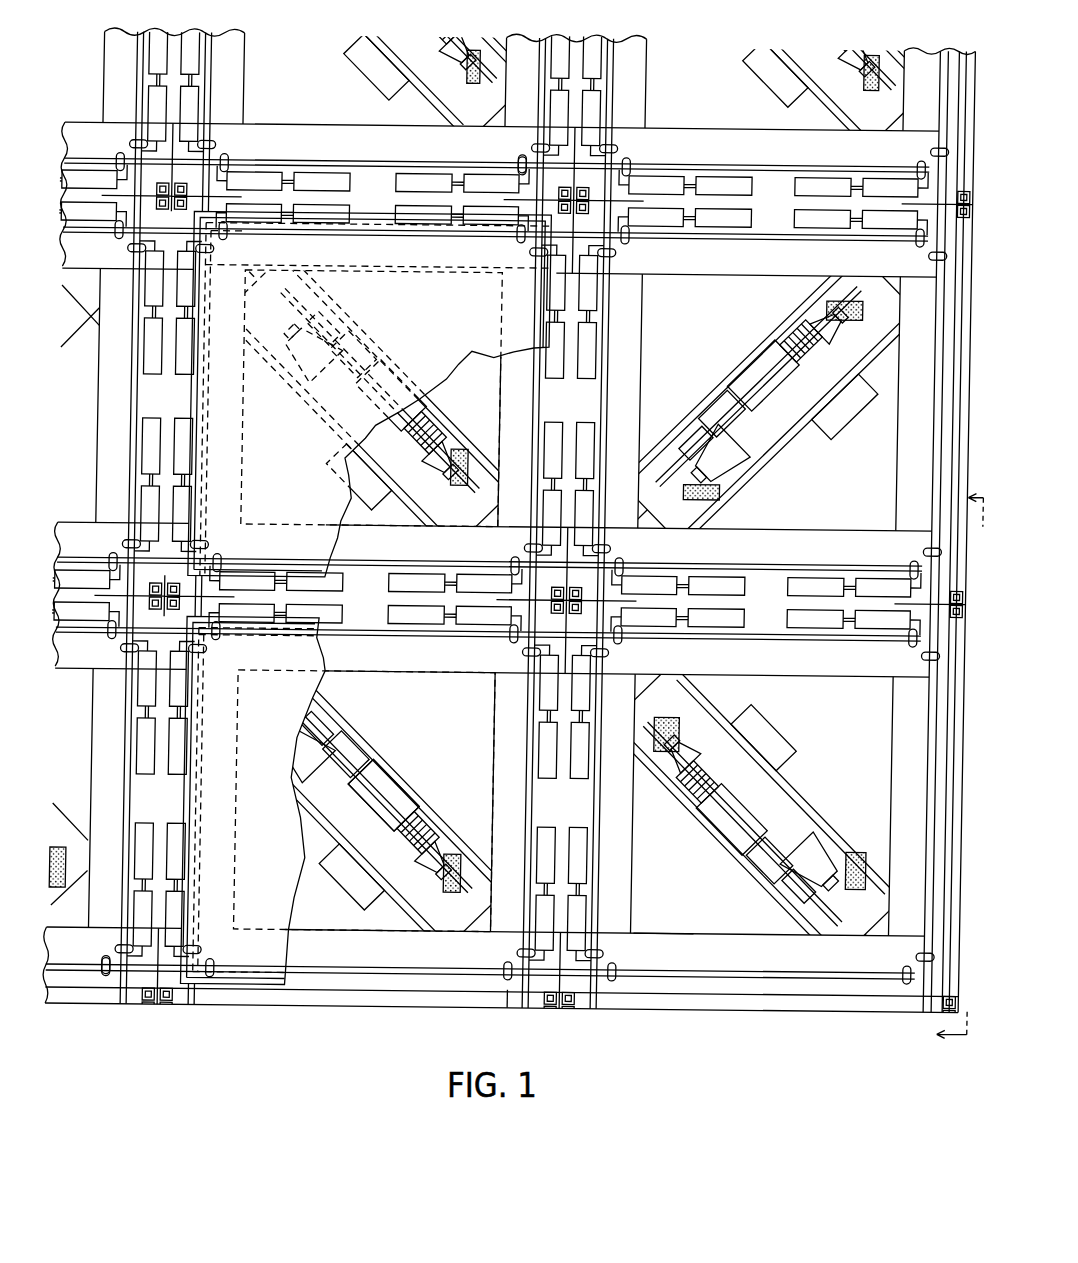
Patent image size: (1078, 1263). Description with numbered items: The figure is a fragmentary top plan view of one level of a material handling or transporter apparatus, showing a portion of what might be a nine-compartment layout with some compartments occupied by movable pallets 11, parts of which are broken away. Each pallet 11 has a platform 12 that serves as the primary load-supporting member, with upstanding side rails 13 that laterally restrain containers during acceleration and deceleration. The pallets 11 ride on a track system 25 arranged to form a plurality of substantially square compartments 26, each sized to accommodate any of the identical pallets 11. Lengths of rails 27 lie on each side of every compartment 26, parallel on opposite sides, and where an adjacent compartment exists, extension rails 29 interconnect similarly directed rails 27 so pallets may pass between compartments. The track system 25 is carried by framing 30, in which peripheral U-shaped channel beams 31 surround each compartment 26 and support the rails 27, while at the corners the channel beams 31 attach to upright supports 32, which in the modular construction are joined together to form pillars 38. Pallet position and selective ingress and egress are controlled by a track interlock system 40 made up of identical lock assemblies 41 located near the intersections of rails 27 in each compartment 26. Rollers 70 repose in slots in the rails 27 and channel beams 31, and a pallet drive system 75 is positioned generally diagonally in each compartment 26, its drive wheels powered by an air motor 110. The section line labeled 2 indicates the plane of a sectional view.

The movable pallet 11 is at (471, 359).
The platform 12 is at (433, 312).
The upstanding side rail 13 is at (370, 215).
The track system 25 is at (415, 980).
The compartment 26 is at (322, 203).
The rail 27 is at (613, 160).
The extension rail 29 is at (545, 580).
The framing 30 is at (684, 926).
The U-shaped channel beam 31 is at (682, 130).
The upright support 32 is at (572, 1010).
The pillar 38 is at (581, 210).
The track interlock system 40 is at (505, 954).
The lock assembly 41 is at (602, 299).
The roller 70 is at (515, 157).
The pallet drive system 75 is at (799, 481).
The air motor 110 is at (400, 787).
The section line 2 is at (960, 768).